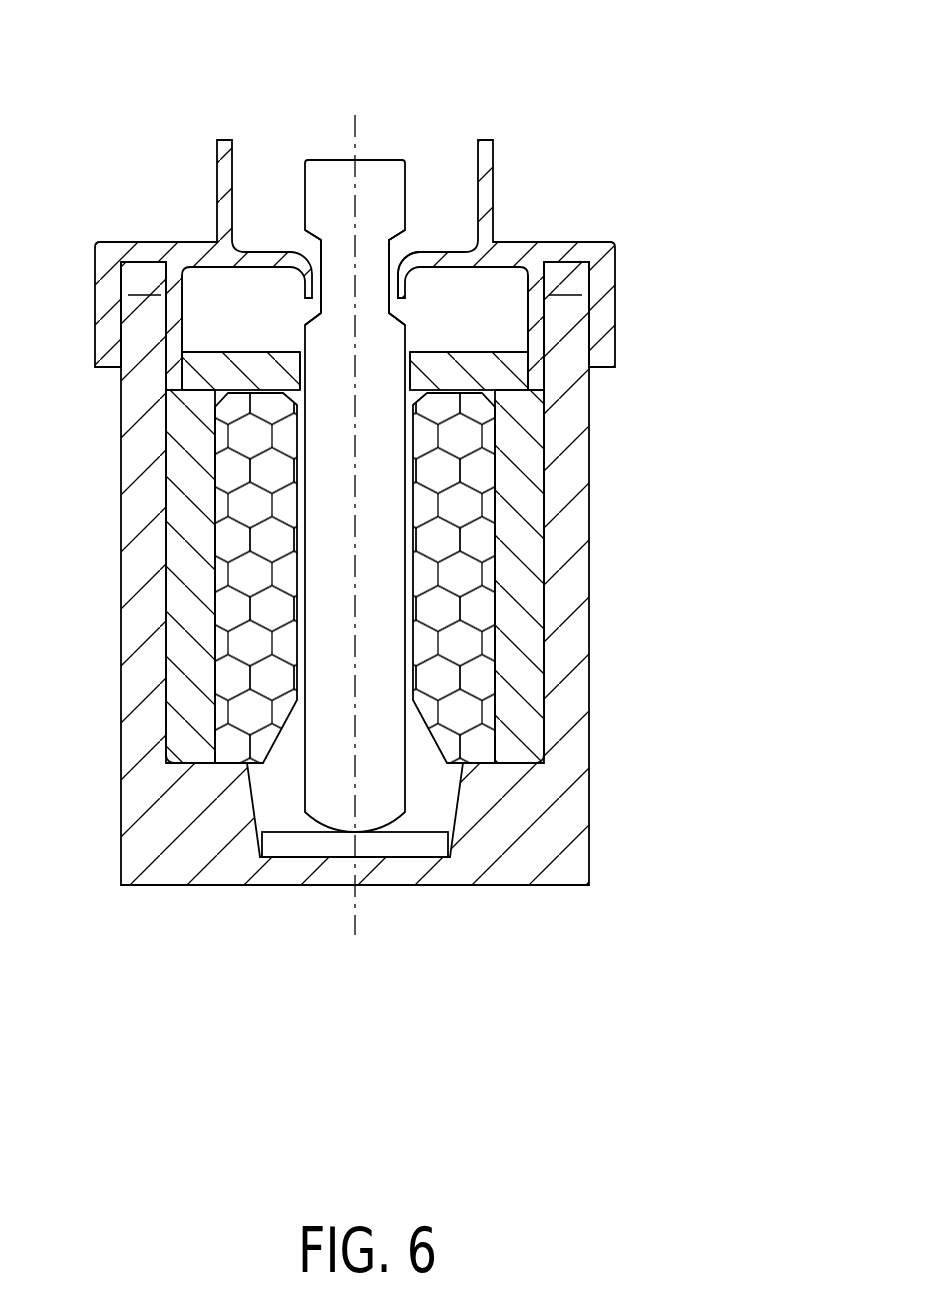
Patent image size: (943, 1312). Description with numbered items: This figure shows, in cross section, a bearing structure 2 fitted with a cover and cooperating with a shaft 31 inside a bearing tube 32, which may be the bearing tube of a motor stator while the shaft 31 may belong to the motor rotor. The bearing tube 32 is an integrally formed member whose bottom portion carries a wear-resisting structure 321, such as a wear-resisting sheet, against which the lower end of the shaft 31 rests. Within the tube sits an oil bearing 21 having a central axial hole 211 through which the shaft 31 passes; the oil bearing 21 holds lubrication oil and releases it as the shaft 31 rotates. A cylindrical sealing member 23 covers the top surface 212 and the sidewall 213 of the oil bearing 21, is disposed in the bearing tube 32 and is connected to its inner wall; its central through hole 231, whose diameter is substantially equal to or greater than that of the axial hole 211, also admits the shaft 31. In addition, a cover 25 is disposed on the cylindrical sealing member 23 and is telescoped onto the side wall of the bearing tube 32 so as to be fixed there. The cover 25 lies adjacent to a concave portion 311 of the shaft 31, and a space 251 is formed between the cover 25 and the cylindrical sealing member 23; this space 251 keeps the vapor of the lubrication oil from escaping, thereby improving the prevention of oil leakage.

The bearing structure 2 is at (197, 39).
The oil bearing 21 is at (260, 400).
The axial hole 211 is at (425, 352).
The top surface 212 is at (494, 421).
The sidewall 213 is at (494, 532).
The cylindrical sealing member 23 is at (203, 365).
The through hole 231 is at (299, 365).
The cover 25 is at (593, 247).
The space 251 is at (499, 290).
The shaft 31 is at (378, 165).
The concave portion 311 is at (420, 247).
The bearing tube 32 is at (560, 302).
The wear-resisting structure 321 is at (392, 843).